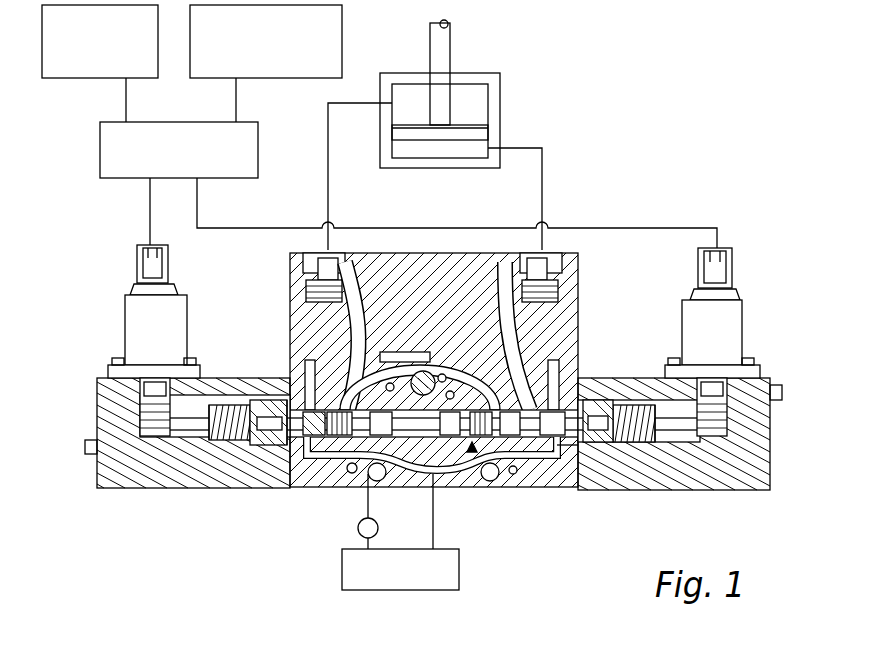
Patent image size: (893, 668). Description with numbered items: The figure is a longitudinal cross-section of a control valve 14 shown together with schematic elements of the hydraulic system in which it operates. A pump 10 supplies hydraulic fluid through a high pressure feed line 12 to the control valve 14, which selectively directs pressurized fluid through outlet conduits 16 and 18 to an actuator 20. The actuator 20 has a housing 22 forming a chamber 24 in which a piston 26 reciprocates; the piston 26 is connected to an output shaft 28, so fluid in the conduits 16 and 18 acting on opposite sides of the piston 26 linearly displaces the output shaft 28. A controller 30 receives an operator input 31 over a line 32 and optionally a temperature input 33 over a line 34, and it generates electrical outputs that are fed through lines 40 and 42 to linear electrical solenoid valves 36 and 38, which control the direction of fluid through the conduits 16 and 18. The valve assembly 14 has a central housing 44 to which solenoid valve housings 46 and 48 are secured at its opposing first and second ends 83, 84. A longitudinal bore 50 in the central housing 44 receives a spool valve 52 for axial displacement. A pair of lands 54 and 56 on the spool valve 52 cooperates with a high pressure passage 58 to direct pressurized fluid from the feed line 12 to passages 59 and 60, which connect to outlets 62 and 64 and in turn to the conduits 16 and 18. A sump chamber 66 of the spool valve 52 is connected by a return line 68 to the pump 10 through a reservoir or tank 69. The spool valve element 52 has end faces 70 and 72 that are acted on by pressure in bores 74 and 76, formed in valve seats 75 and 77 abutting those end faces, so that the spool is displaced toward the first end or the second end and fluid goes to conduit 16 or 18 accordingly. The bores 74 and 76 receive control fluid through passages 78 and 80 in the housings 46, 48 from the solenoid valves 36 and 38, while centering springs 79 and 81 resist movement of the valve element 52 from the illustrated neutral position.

The pump 10 is at (355, 530).
The high pressure feed line 12 is at (358, 528).
The control valve 14 is at (208, 503).
The outlet conduit 16 is at (328, 178).
The outlet conduit 18 is at (542, 178).
The actuator 20 is at (487, 107).
The housing 22 is at (500, 73).
The chamber 24 is at (480, 108).
The piston 26 is at (440, 140).
The output shaft 28 is at (450, 45).
The controller 30 is at (179, 150).
The operator input 31 is at (100, 41).
The line 32 is at (126, 90).
The temperature input 33 is at (266, 41).
The line 34 is at (236, 98).
The linear electrical solenoid valve 36 is at (125, 322).
The linear electrical solenoid valve 38 is at (742, 322).
The line 40 is at (150, 200).
The line 42 is at (233, 229).
The central housing 44 is at (578, 310).
The solenoid valve housing 46 is at (115, 488).
The solenoid valve housing 48 is at (742, 490).
The longitudinal bore 50 is at (490, 480).
The spool valve 52 is at (434, 485).
The land 54 is at (364, 478).
The land 56 is at (462, 482).
The high pressure passage 58 is at (455, 350).
The passage 59 is at (387, 303).
The passage 60 is at (490, 340).
The outlet 62 is at (303, 256).
The outlet 64 is at (562, 258).
The sump chamber 66 is at (385, 480).
The return line 68 is at (433, 520).
The reservoir 69 is at (400, 569).
The end face 70 is at (271, 458).
The end face 72 is at (640, 462).
The bore 74 is at (283, 400).
The valve seat 75 is at (280, 452).
The bore 76 is at (560, 392).
The valve seat 77 is at (601, 464).
The passage 78 is at (172, 445).
The centering spring 79 is at (226, 456).
The passage 80 is at (672, 450).
The centering spring 81 is at (640, 470).
The first end 83 is at (118, 548).
The second end 84 is at (630, 550).